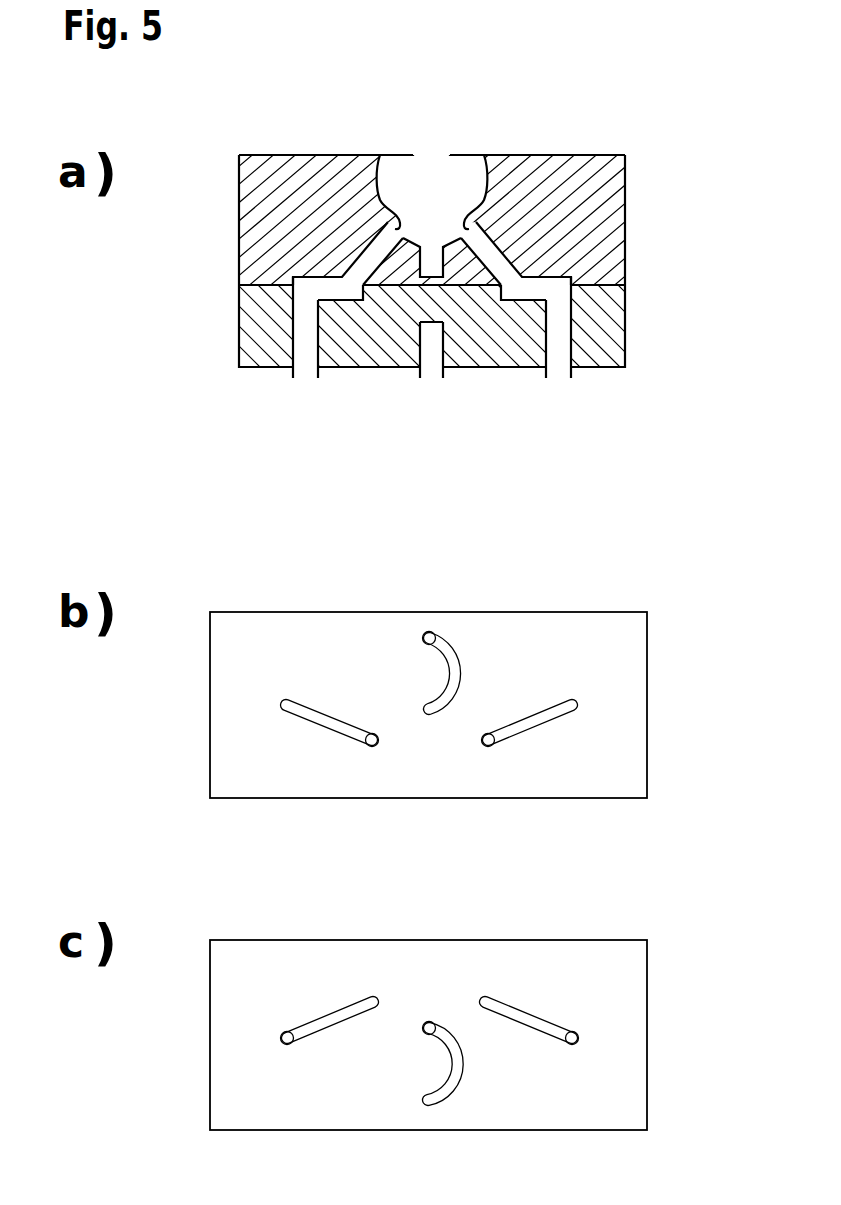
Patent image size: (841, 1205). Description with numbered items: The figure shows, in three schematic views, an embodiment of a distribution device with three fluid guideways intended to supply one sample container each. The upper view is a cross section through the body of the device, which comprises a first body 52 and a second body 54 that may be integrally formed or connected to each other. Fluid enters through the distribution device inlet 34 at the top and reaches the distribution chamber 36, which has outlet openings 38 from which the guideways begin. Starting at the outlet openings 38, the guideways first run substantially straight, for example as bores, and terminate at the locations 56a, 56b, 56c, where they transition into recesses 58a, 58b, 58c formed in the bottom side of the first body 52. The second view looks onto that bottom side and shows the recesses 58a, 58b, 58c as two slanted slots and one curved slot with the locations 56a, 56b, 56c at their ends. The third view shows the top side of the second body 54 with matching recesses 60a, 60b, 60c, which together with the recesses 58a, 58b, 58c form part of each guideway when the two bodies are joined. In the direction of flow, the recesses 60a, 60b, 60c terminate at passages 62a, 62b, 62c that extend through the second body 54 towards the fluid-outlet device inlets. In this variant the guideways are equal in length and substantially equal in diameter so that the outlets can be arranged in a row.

The distribution device inlet 34 is at (430, 154).
The distribution chamber 36 is at (452, 183).
The outlet openings 38 is at (378, 183).
The first body 52 is at (625, 162).
The second body 54 is at (625, 365).
The location 56a is at (370, 747).
The location 56b is at (420, 629).
The location 56c is at (488, 748).
The recess 58a is at (312, 279).
The recess 58b is at (456, 666).
The recess 58c is at (553, 279).
The recess 60a is at (348, 298).
The recess 60b is at (457, 1073).
The recess 60c is at (516, 298).
The passage 62a is at (302, 343).
The passage 62b is at (427, 350).
The passage 62c is at (562, 343).